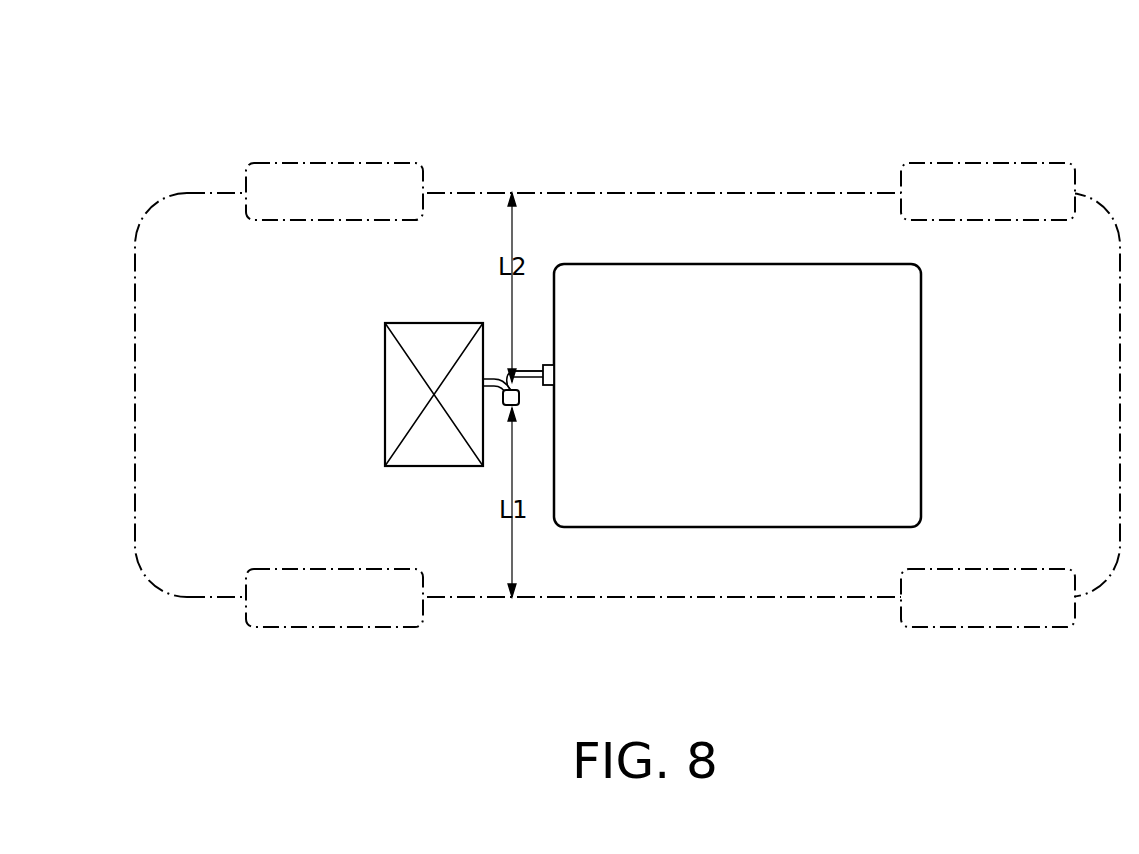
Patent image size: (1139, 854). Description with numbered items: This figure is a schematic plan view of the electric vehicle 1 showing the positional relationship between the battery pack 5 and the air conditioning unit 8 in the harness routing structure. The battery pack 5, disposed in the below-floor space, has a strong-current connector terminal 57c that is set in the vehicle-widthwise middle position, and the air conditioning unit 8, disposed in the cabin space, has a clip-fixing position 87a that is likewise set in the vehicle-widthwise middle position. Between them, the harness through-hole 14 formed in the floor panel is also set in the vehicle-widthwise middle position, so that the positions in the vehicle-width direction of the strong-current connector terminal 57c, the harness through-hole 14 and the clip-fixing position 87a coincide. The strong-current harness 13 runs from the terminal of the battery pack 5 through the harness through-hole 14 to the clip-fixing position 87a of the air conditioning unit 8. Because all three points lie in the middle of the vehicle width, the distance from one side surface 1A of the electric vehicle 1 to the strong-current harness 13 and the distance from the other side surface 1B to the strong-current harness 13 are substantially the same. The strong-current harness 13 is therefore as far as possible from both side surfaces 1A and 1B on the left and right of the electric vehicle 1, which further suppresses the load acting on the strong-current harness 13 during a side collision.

The electric vehicle 1 is at (201, 130).
The side surface 1A is at (602, 597).
The side surface 1B is at (628, 193).
The battery pack 5 is at (687, 498).
The air conditioning unit 8 is at (443, 330).
The strong-current harness 13 is at (522, 367).
The harness through-hole 14 is at (515, 410).
The strong-current connector terminal 57c is at (533, 383).
The clip-fixing position 87a is at (504, 392).